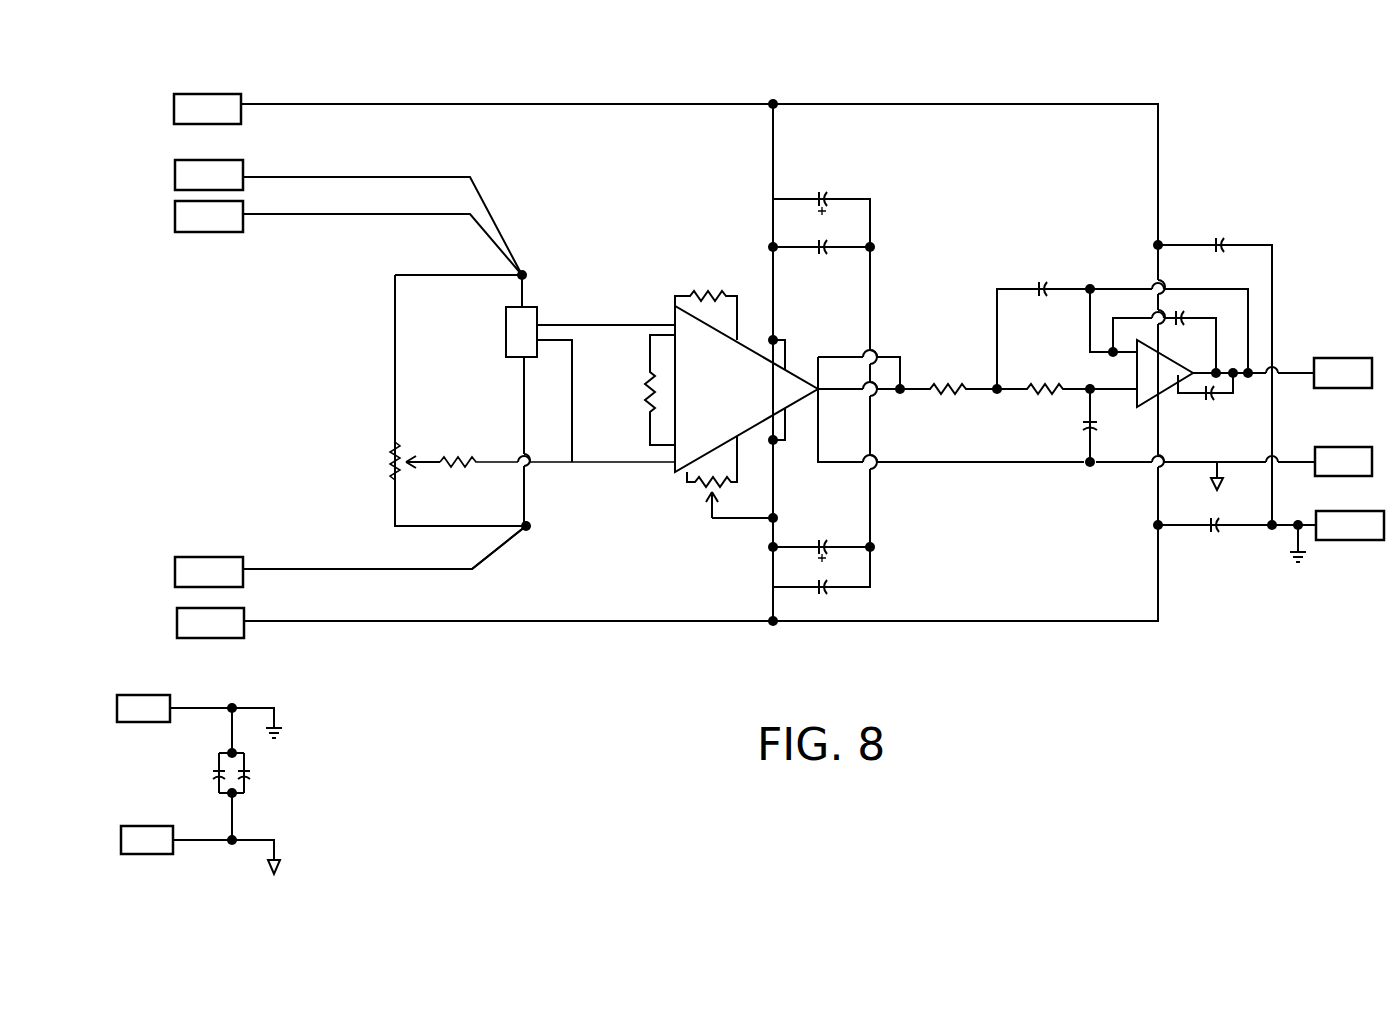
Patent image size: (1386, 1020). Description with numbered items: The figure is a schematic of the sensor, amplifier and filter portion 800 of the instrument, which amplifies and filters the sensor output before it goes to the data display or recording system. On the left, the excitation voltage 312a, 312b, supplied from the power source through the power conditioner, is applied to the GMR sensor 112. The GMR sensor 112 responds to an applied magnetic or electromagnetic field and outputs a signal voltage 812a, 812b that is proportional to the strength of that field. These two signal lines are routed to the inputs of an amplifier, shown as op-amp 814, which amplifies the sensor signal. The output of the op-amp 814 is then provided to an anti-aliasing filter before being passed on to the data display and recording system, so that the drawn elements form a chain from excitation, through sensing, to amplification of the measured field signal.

The amplifier and filter portion 800 is at (893, 77).
The excitation voltage 312a is at (275, 214).
The excitation voltage 312b is at (260, 567).
The GMR sensor 112 is at (528, 300).
The signal voltage 812a is at (584, 322).
The signal voltage 812b is at (574, 395).
The op-amp 814 is at (748, 336).